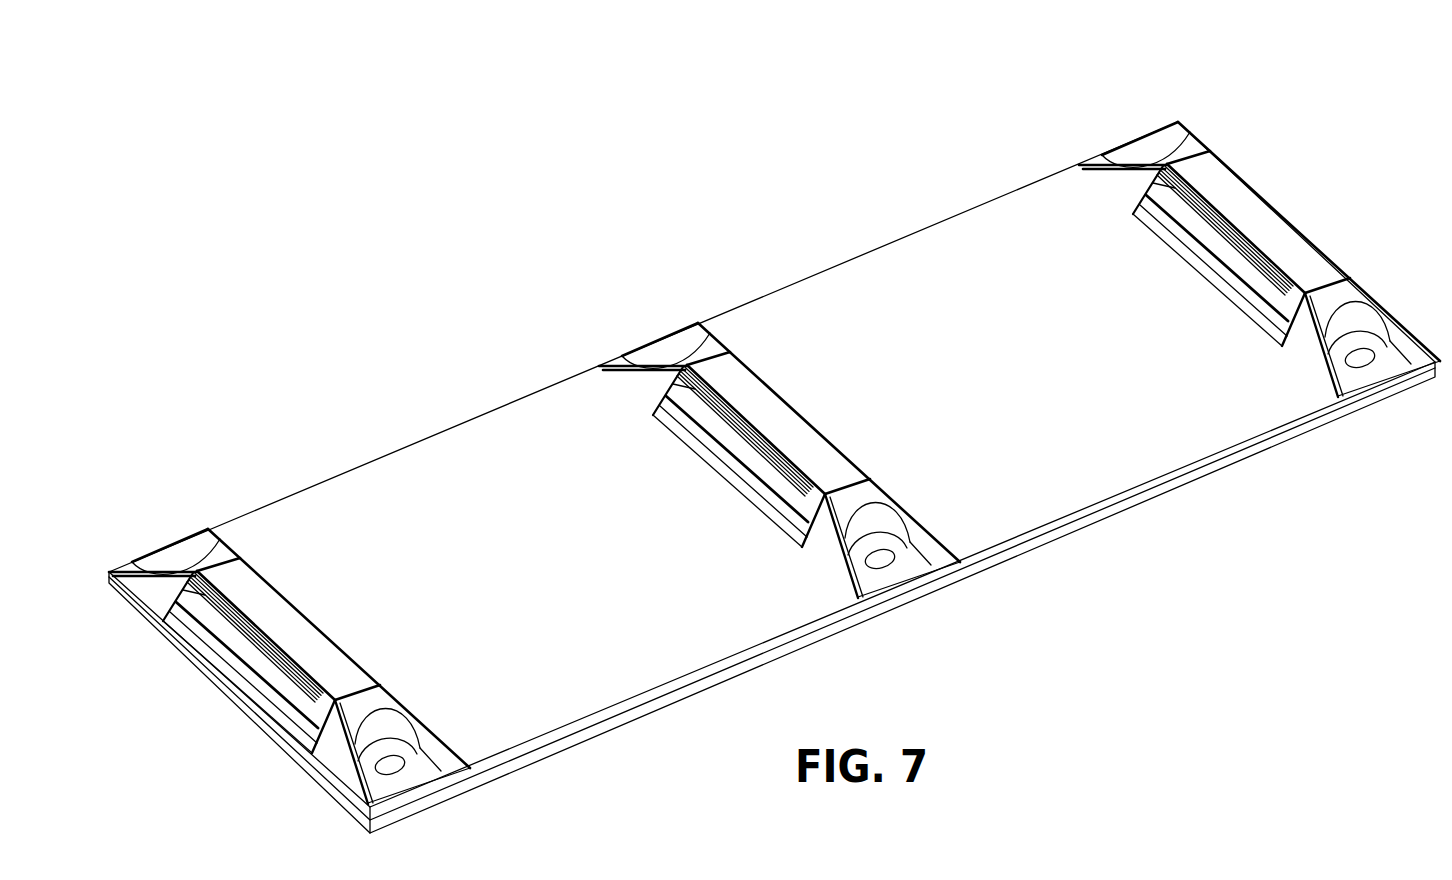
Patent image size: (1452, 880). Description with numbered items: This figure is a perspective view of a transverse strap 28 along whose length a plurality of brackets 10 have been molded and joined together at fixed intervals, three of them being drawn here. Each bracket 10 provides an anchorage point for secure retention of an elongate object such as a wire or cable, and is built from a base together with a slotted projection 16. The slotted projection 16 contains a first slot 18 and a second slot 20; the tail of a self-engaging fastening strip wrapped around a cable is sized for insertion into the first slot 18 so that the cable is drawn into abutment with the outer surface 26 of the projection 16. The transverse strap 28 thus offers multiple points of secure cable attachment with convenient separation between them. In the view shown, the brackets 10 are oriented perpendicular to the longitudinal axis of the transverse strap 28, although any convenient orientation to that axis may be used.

The bracket 10 is at (774, 443).
The slotted projection 16 is at (338, 750).
The first slot 18 is at (268, 663).
The second slot 20 is at (288, 722).
The outer surface 26 is at (255, 607).
The transverse strap 28 is at (978, 578).